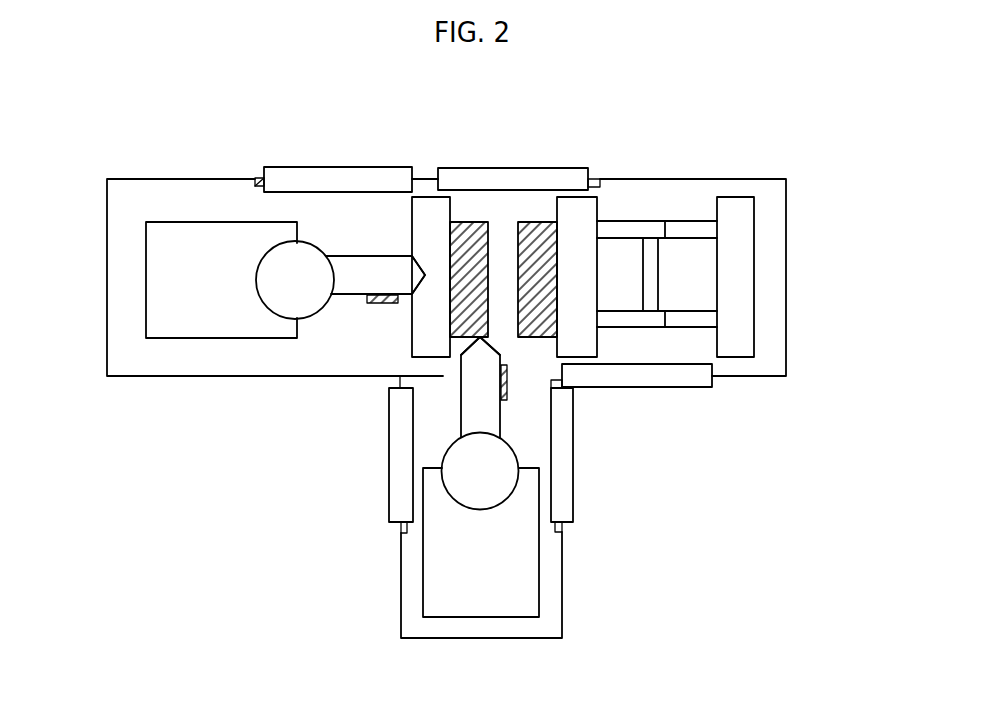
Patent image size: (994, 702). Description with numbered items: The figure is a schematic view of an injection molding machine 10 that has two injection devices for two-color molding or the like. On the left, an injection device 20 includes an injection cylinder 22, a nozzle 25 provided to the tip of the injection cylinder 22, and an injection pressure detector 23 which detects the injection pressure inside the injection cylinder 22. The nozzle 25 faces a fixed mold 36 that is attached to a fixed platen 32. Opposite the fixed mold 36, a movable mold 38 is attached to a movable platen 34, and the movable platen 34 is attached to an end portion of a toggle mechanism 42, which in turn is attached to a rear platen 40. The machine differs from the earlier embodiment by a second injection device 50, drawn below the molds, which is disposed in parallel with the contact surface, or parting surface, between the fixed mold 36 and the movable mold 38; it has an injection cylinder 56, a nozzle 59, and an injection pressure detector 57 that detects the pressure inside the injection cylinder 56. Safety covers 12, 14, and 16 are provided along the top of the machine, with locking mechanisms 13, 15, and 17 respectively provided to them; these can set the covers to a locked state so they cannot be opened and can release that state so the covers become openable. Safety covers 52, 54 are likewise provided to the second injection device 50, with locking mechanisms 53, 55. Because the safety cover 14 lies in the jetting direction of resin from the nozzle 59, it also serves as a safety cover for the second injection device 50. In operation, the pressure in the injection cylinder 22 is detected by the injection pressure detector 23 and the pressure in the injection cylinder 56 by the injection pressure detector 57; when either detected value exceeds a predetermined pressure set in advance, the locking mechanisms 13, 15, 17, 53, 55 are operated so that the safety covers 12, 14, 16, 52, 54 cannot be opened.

The injection molding machine 10 is at (796, 162).
The safety cover 12 is at (344, 167).
The locking mechanism 13 is at (256, 177).
The safety cover 14 is at (505, 168).
The locking mechanism 15 is at (598, 179).
The safety cover 16 is at (688, 390).
The locking mechanism 17 is at (573, 389).
The injection device 20 is at (197, 338).
The injection cylinder 22 is at (345, 298).
The injection pressure detector 23 is at (375, 303).
The nozzle 25 is at (424, 285).
The fixed platen 32 is at (428, 197).
The movable platen 34 is at (560, 197).
The fixed mold 36 is at (469, 222).
The movable mold 38 is at (535, 222).
The rear platen 40 is at (754, 273).
The toggle mechanism 42 is at (703, 327).
The second injection device 50 is at (401, 598).
The safety cover 52 is at (389, 492).
The locking mechanism 53 is at (401, 530).
The safety cover 54 is at (573, 485).
The locking mechanism 55 is at (562, 530).
The injection cylinder 56 is at (502, 421).
The injection pressure detector 57 is at (508, 369).
The nozzle 59 is at (480, 337).